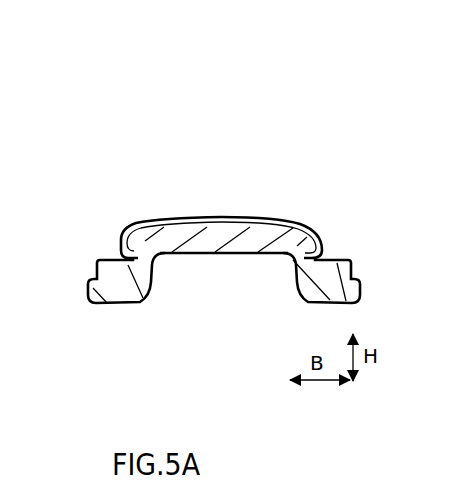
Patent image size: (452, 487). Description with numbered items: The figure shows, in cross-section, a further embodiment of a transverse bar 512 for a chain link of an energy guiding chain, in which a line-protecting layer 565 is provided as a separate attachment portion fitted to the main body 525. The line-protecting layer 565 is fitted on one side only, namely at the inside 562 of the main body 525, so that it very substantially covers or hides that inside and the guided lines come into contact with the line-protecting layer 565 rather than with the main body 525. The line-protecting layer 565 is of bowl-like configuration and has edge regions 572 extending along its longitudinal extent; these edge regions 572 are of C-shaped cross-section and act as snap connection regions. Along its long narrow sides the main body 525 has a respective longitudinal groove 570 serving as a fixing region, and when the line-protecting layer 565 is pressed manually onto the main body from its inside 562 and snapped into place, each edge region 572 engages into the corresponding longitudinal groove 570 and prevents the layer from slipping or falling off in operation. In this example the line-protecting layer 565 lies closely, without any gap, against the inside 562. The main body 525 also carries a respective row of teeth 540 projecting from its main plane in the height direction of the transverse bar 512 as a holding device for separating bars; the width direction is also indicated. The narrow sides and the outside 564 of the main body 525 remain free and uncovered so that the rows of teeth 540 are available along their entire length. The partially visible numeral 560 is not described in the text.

The transverse bar 512 is at (128, 100).
The inside of the main body 562 is at (232, 200).
The line-protecting layer 565 is at (278, 222).
The edge regions 572 is at (120, 245).
The longitudinal groove 570 is at (312, 257).
The outside of the main body 564 is at (222, 290).
The main body 525 is at (133, 266).
The row of teeth 540 is at (338, 272).
The clip 560 is at (443, 141).